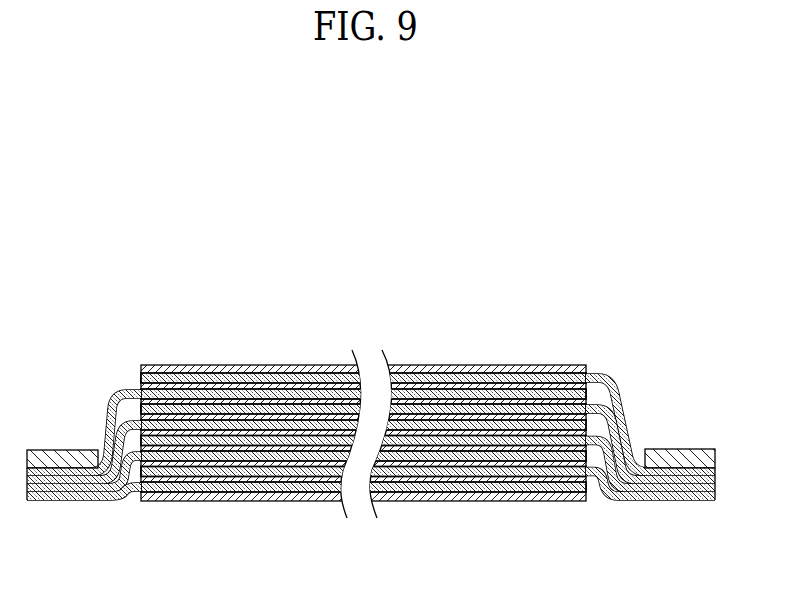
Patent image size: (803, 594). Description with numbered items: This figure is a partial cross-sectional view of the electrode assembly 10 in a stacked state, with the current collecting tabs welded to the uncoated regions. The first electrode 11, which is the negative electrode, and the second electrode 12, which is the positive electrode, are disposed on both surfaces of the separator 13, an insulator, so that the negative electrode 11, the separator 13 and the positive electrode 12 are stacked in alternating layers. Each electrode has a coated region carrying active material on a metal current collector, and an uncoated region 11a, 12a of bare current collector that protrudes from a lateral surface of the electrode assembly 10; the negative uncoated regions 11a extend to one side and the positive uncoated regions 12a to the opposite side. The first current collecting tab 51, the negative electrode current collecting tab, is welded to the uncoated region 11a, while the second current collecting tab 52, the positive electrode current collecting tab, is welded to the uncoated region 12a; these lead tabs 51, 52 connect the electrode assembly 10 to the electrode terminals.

The electrode assembly 10 is at (371, 415).
The first electrode 11 is at (306, 489).
The uncoated region 11a is at (45, 472).
The second electrode 12 is at (428, 475).
The uncoated region 12a is at (655, 472).
The separator 13 is at (205, 498).
The first current collecting tab 51 is at (62, 457).
The second current collecting tab 52 is at (679, 457).